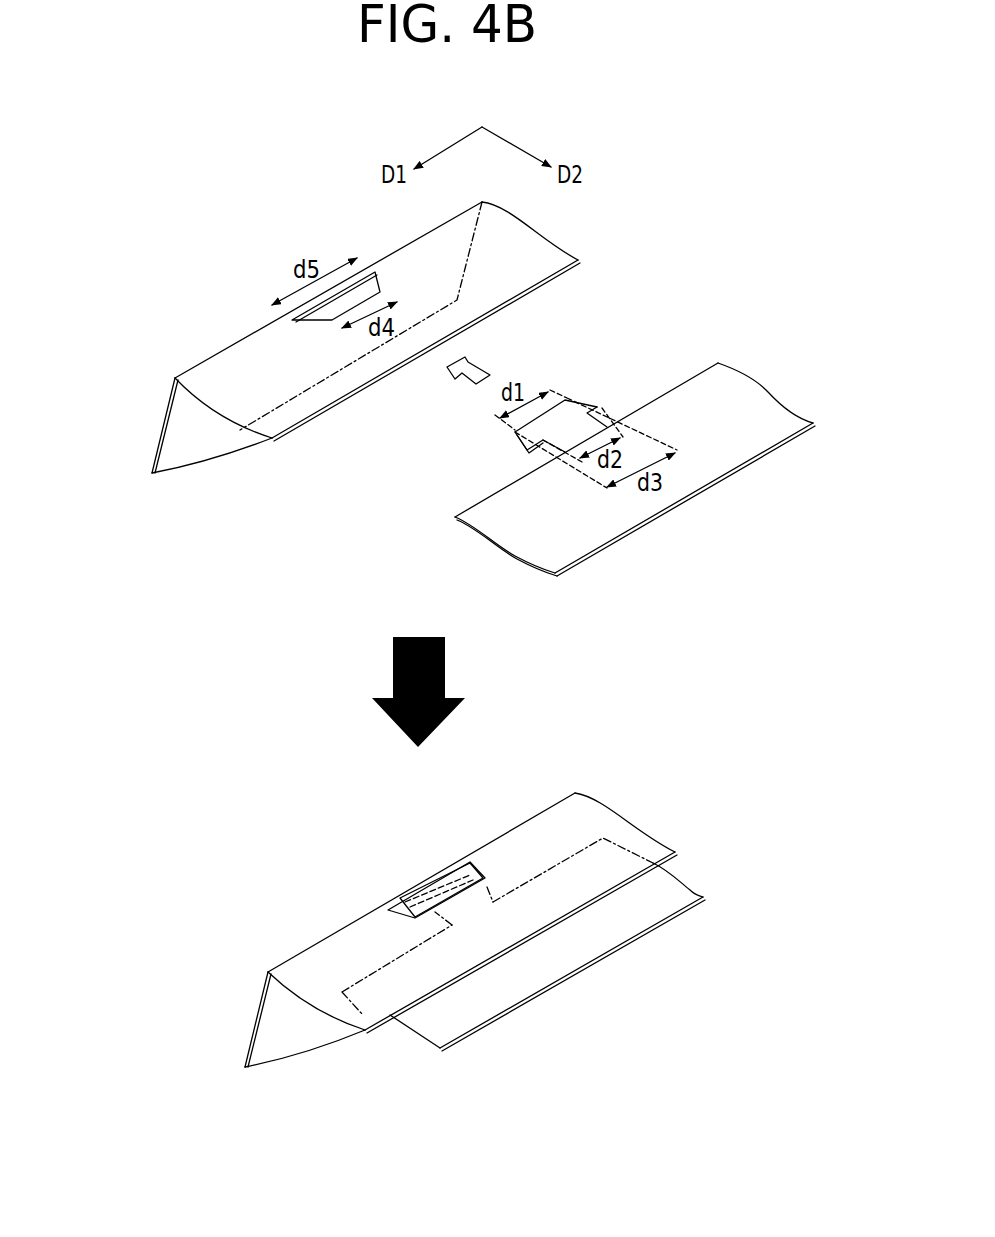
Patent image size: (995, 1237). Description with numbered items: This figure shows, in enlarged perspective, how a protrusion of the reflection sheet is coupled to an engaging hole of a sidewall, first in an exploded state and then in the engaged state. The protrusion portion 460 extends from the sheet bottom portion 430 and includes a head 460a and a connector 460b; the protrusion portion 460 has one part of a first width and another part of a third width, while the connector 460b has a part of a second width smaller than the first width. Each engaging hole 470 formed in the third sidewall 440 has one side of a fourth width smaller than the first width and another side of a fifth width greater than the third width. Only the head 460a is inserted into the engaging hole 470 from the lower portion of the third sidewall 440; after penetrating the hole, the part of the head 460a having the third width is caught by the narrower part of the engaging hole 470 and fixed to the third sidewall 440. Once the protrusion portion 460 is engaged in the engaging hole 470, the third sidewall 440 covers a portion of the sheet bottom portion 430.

The sheet bottom portion 430 is at (755, 393).
The third sidewall 440 is at (162, 427).
The protrusion portion 460 is at (657, 325).
The head 460a is at (578, 403).
The connector 460b is at (612, 410).
The engaging hole 470 is at (327, 318).